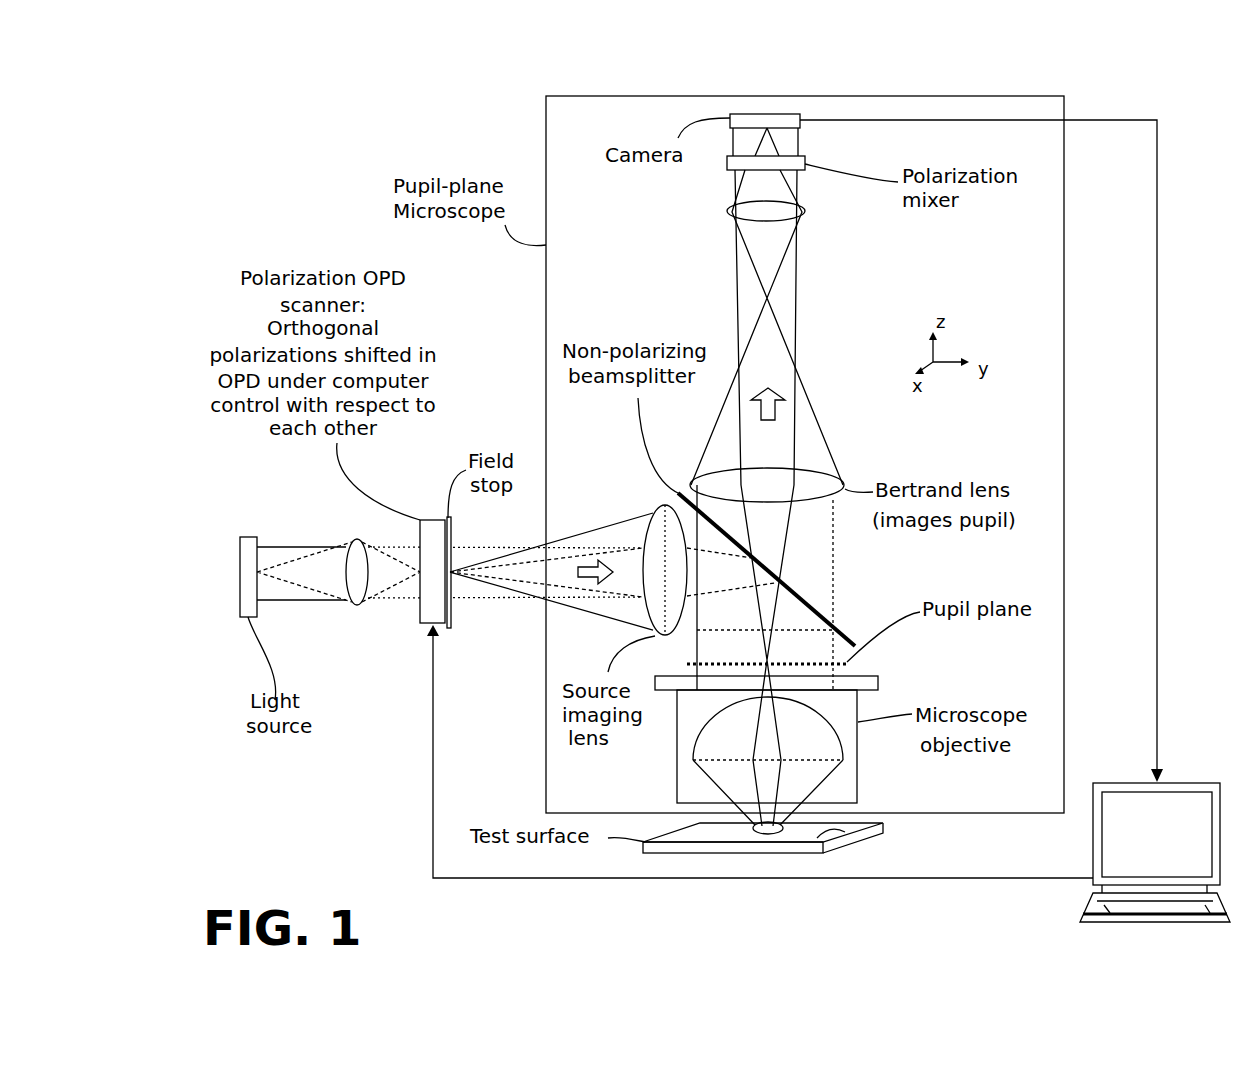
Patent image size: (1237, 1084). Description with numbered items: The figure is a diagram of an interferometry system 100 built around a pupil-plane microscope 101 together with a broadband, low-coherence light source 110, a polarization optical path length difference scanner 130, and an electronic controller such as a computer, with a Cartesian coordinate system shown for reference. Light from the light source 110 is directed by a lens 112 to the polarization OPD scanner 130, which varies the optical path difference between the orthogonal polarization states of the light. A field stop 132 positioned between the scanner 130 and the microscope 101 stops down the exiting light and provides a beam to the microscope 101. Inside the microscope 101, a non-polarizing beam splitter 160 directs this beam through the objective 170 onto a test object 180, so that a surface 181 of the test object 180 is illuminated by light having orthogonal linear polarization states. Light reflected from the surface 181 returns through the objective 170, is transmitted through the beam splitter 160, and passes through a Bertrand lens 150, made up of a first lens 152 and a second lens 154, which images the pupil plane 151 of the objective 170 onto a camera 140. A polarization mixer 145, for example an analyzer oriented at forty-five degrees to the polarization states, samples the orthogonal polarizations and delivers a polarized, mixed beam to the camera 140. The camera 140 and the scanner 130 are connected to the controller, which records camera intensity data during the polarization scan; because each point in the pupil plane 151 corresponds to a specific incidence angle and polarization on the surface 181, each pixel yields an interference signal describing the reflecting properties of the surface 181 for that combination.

The system 100 is at (334, 176).
The microscope 101 is at (967, 97).
The light source 110 is at (248, 537).
The lens 112 is at (357, 605).
The polarization optical path length difference (OPD) scanner 130 is at (420, 612).
The field stop 132 is at (452, 628).
The camera 140 is at (783, 114).
The polarization mixer 145 is at (727, 164).
The Bertrand lens 150 is at (938, 535).
The pupil plane 151 is at (847, 665).
The first lens 152 is at (805, 211).
The second lens 154 is at (840, 484).
The beam splitter 160 is at (848, 636).
The objective 170 is at (858, 758).
The test object 180 is at (742, 855).
The surface 181 is at (845, 835).